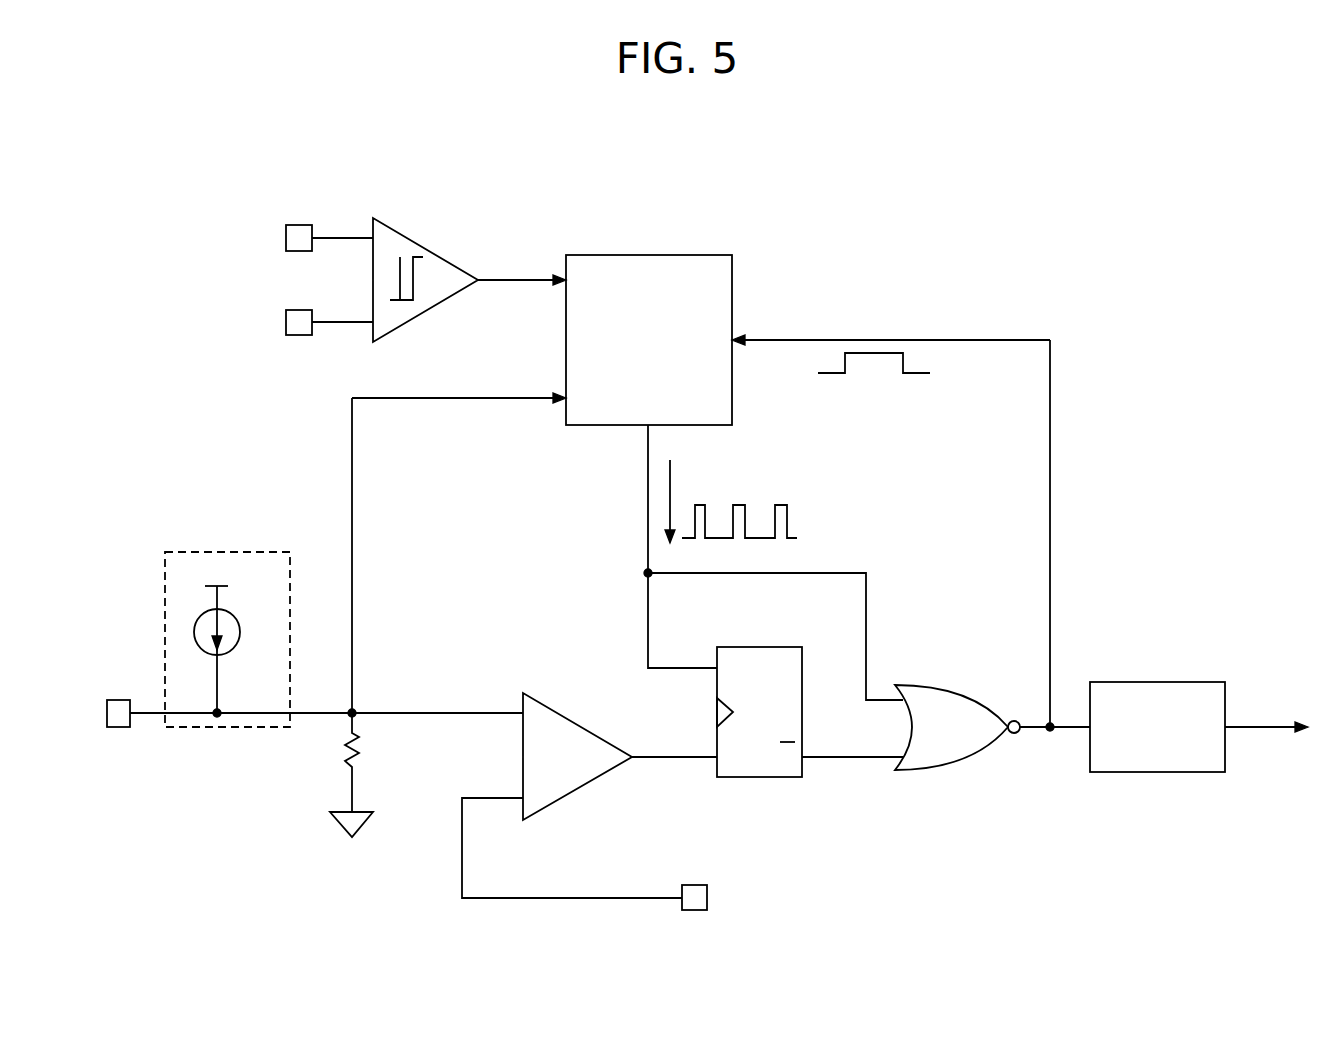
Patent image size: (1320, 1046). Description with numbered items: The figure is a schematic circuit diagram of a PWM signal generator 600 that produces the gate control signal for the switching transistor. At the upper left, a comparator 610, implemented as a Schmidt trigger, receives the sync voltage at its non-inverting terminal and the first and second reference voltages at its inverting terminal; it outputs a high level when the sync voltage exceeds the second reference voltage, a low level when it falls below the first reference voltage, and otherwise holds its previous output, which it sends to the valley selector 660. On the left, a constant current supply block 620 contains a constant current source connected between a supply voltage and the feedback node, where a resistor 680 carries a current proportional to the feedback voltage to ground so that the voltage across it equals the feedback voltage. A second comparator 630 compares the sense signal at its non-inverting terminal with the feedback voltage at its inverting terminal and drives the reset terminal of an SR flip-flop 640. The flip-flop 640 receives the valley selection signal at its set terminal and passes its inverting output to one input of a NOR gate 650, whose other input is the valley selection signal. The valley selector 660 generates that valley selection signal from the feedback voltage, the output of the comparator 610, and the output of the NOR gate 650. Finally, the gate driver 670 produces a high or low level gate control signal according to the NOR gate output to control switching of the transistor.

The PWM signal generator 600 is at (999, 222).
The comparator 610 is at (417, 240).
The constant current supply block 620 is at (232, 552).
The comparator 630 is at (568, 717).
The SR flip-flop 640 is at (780, 777).
The NOR gate 650 is at (945, 684).
The valley selector 660 is at (697, 255).
The gate driver 670 is at (1172, 682).
The resistor 680 is at (302, 755).